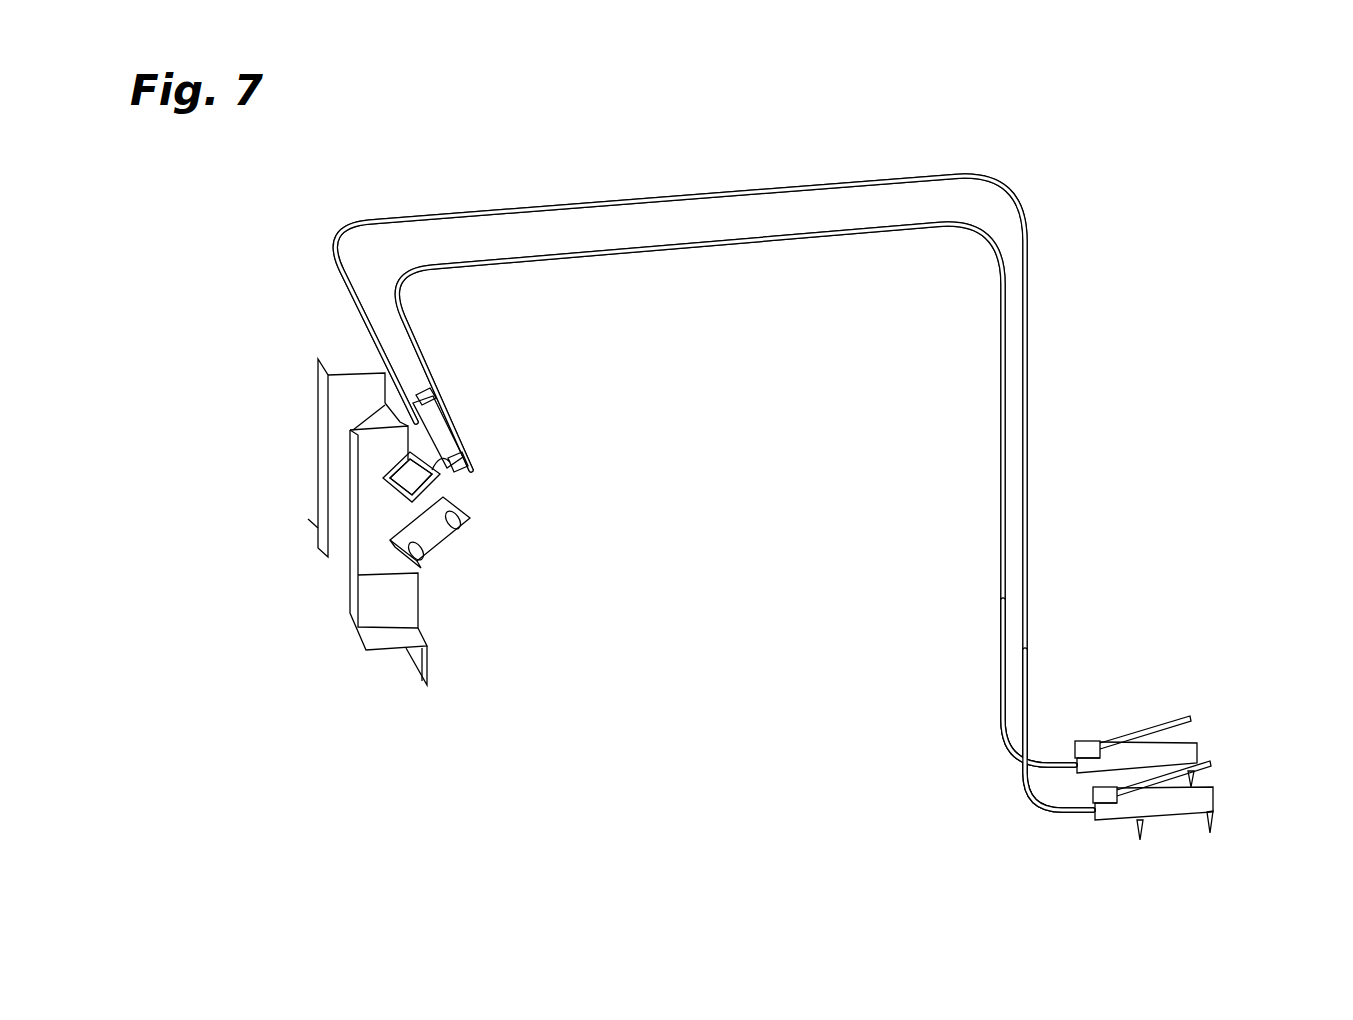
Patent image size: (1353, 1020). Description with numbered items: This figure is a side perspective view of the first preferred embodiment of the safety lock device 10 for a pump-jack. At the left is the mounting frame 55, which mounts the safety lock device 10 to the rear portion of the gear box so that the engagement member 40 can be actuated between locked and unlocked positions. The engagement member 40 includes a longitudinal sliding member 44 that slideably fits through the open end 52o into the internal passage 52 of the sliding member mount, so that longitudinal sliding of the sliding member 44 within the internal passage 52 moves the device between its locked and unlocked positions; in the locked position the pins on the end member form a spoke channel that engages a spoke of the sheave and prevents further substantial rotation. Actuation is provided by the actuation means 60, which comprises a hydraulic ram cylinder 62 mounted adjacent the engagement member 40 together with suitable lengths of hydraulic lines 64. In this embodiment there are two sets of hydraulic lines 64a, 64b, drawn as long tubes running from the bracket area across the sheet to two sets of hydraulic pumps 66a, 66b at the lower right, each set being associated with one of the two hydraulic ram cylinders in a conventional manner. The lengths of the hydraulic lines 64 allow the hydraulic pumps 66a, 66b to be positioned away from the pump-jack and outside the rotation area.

The safety lock device 10 is at (190, 238).
The engagement member 40 is at (495, 507).
The longitudinal sliding member 44 is at (395, 518).
The internal passage 52 is at (385, 492).
The open end 52o is at (411, 477).
The mounting frame 55 is at (280, 502).
The actuation means 60 is at (1163, 663).
The hydraulic ram cylinder 62 is at (478, 420).
The hydraulic lines 64 is at (1060, 407).
The hydraulic lines 64a is at (990, 688).
The hydraulic lines 64b is at (1012, 783).
The hydraulic pump 66a is at (1218, 718).
The hydraulic pump 66b is at (1240, 787).